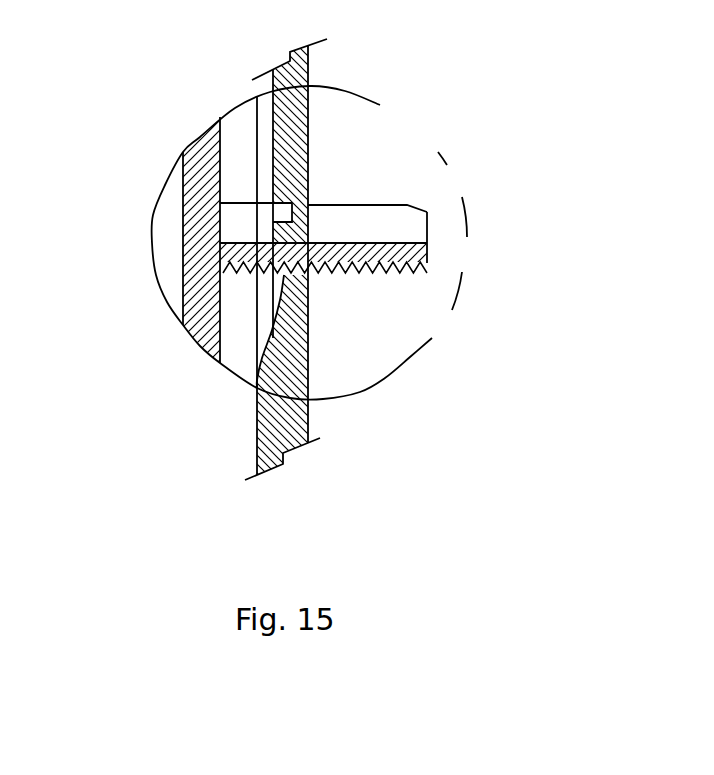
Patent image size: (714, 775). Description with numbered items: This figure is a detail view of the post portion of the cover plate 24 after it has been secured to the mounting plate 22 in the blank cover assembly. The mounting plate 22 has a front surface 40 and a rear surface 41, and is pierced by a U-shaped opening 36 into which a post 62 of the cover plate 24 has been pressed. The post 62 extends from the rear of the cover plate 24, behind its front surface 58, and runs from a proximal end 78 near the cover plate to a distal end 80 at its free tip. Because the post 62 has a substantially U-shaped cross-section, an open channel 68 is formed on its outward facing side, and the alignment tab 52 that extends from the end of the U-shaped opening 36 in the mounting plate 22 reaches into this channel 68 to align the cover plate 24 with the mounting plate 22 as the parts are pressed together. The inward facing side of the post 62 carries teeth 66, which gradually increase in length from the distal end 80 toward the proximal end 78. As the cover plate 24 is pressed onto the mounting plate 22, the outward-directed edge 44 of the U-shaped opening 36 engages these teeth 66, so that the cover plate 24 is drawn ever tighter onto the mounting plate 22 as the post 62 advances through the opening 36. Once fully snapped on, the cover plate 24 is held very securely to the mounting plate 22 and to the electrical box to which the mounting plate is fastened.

The mounting plate 22 is at (305, 68).
The cover plate 24 is at (200, 145).
The U-shaped opening 36 is at (282, 292).
The front surface 40 is at (257, 418).
The rear surface 41 is at (310, 416).
The outward-directed edge 44 is at (293, 283).
The alignment tab 52 is at (313, 228).
The front surface 58 is at (183, 242).
The post 62 is at (418, 207).
The teeth 66 is at (353, 275).
The open channel 68 is at (357, 238).
The proximal end 78 is at (220, 199).
The distal end 80 is at (428, 233).